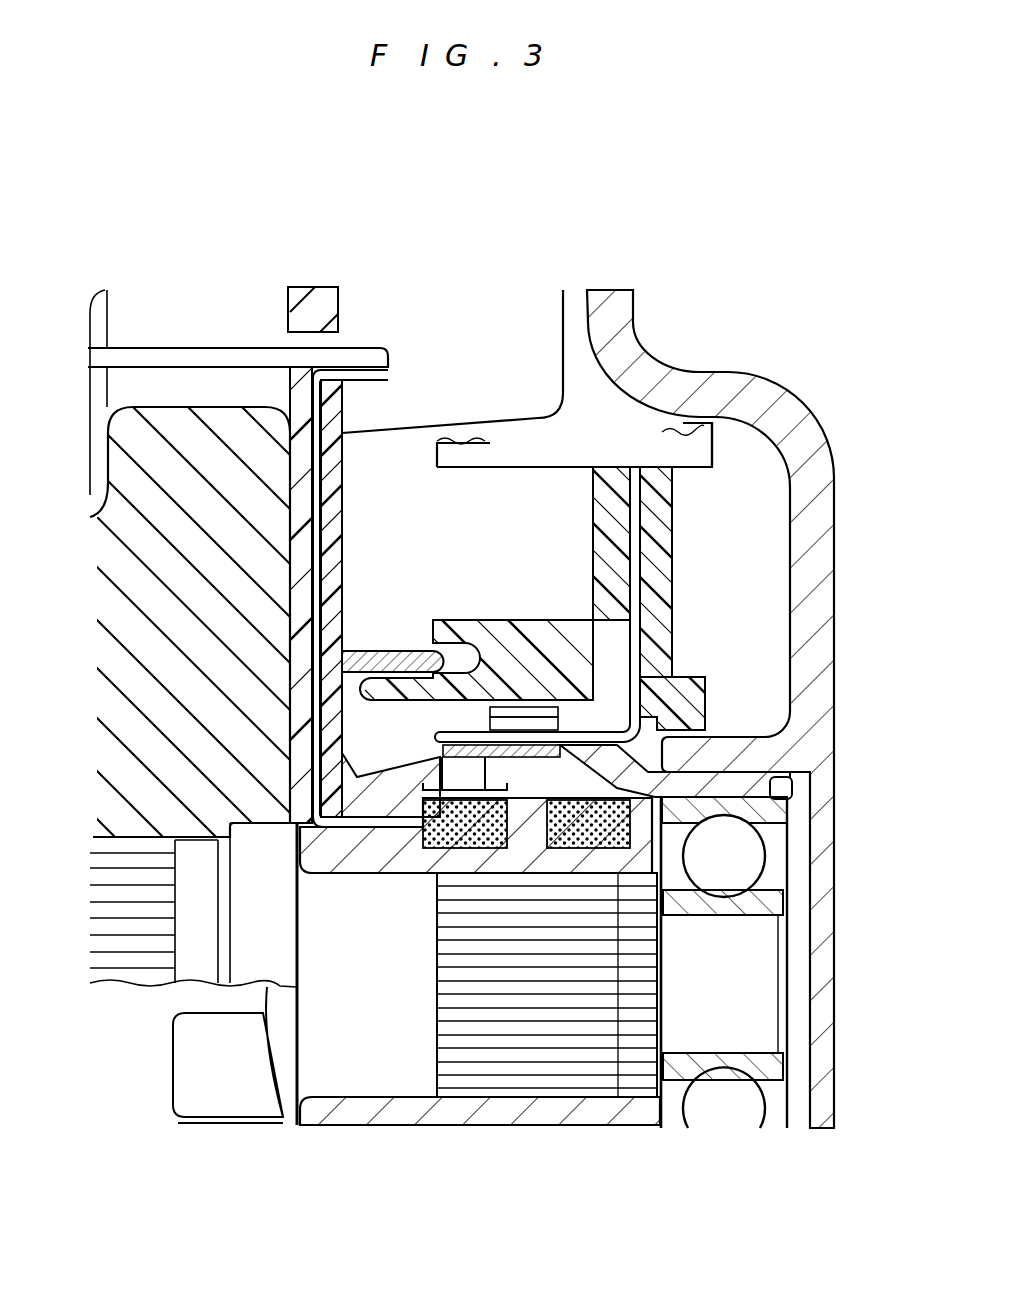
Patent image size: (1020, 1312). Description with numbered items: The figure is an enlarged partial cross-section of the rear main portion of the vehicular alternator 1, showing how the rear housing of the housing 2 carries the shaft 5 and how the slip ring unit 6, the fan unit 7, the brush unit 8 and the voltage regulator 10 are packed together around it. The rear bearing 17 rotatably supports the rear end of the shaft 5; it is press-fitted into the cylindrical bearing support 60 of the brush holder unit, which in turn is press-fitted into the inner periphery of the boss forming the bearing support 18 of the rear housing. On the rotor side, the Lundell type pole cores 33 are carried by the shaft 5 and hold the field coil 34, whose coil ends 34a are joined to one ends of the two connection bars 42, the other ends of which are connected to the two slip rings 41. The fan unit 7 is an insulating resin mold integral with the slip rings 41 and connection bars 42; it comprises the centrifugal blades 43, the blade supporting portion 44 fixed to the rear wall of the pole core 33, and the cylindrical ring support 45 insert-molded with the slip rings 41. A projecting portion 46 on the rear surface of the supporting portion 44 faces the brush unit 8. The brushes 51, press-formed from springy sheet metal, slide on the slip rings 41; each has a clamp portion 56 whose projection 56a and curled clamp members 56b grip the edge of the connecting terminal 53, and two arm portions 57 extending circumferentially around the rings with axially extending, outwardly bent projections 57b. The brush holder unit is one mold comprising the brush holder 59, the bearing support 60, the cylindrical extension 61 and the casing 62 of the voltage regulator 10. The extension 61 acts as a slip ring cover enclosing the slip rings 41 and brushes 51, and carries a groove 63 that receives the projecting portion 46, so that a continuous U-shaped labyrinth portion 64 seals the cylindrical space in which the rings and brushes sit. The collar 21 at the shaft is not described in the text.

The alternator 1 is at (728, 208).
The housing 2 is at (659, 337).
The shaft 5 is at (600, 993).
The slip ring unit 6 is at (597, 782).
The fan unit 7 is at (575, 297).
The brush unit 8 is at (692, 626).
The voltage regulator 10 is at (683, 440).
The rear bearing 17 is at (740, 855).
The bearing support 18 is at (737, 757).
The shaft collar 21 is at (207, 1067).
The pole cores 33 is at (213, 427).
The field coil 34 is at (90, 333).
The coil ends of the field coil 34a is at (268, 355).
The slip rings 41 is at (470, 840).
The connection bars 42 is at (333, 523).
The centrifugal blades 43 is at (494, 368).
The blade supporting portion 44 is at (333, 553).
The cylindrical ring support 45 is at (617, 860).
The projecting portion 46 is at (390, 655).
The brushes 51 is at (450, 765).
The connecting terminal 53 is at (642, 553).
The clamp portion 56 is at (590, 541).
The projection 56a is at (540, 710).
The clamp members 56b is at (513, 747).
The arm portions 57 is at (445, 845).
The projections 57b is at (490, 790).
The brush holder 59 is at (700, 677).
The cylindrical bearing support 60 is at (773, 787).
The cylindrical extension 61 is at (473, 687).
The casing 62 is at (713, 450).
The groove 63 is at (467, 643).
The labyrinth portion 64 is at (410, 663).